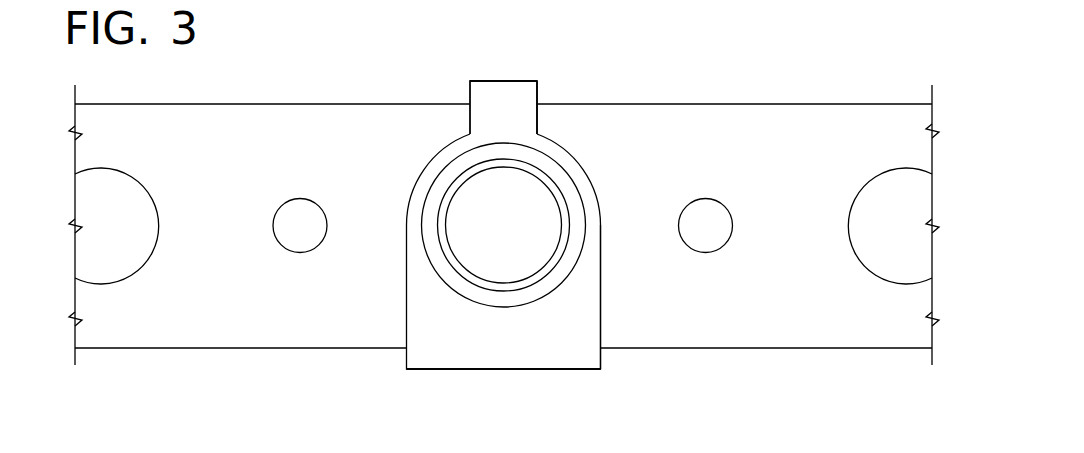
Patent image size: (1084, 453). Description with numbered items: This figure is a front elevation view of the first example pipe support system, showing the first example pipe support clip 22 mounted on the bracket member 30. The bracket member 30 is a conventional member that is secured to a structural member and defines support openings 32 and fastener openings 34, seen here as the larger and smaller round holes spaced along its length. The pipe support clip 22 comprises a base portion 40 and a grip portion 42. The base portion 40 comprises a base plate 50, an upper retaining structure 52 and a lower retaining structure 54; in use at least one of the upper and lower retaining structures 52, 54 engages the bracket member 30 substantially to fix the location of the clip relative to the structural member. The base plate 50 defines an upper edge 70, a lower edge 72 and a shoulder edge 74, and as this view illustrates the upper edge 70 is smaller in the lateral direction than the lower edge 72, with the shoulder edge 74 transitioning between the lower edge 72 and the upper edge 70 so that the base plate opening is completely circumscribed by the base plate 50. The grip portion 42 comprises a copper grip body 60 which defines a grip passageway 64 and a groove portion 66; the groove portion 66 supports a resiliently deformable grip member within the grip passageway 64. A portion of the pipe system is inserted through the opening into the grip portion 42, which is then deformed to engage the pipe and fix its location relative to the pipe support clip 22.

The pipe support clip 22 is at (487, 78).
The bracket member 30 is at (311, 101).
The support openings 32 is at (880, 198).
The fastener openings 34 is at (715, 217).
The base portion 40 is at (432, 371).
The grip portion 42 is at (493, 309).
The base plate 50 is at (565, 342).
The upper retaining structure 52 is at (513, 78).
The lower retaining structure 54 is at (533, 370).
The grip body 60 is at (572, 199).
The grip passageway 64 is at (514, 237).
The groove portion 66 is at (573, 247).
The upper edge 70 is at (537, 120).
The lower edge 72 is at (601, 325).
The shoulder edge 74 is at (582, 160).